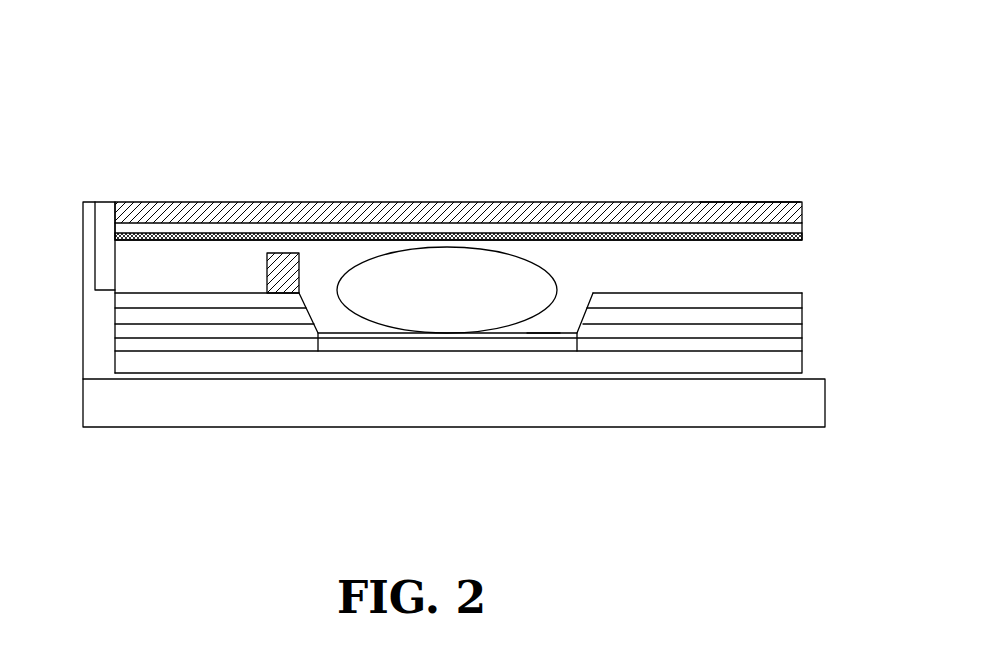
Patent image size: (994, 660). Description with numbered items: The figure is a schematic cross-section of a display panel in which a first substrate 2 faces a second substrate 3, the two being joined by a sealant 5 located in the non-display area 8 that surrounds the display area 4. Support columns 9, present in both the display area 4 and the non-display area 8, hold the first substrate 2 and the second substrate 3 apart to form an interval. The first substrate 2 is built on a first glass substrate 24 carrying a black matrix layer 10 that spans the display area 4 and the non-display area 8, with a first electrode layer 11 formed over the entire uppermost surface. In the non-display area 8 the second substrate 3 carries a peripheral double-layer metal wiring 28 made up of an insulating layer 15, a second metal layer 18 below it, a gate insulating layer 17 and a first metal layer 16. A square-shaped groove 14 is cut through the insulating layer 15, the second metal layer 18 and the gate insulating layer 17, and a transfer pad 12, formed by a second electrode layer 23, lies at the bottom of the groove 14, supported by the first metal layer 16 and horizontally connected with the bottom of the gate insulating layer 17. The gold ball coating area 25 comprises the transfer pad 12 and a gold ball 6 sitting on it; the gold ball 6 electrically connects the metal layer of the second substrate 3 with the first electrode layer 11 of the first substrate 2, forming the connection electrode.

The first substrate 2 is at (880, 188).
The second substrate 3 is at (90, 417).
The display area 4 is at (85, 267).
The sealant 5 is at (783, 82).
The gold ball 6 is at (467, 257).
The non-display area 8 is at (832, 457).
The support column 9 is at (107, 222).
The black matrix layer 10 is at (807, 218).
The first electrode layer 11 is at (807, 237).
The transfer pad 12 is at (380, 333).
The groove 14 is at (590, 295).
The insulating layer 15 is at (805, 296).
The first metal layer 16 is at (128, 347).
The gate insulating layer 17 is at (805, 331).
The second metal layer 18 is at (127, 316).
The second electrode layer 23 is at (527, 333).
The first glass substrate 24 is at (745, 207).
The gold ball coating area 25 is at (515, 143).
The peripheral double-layer metal wiring 28 is at (880, 278).